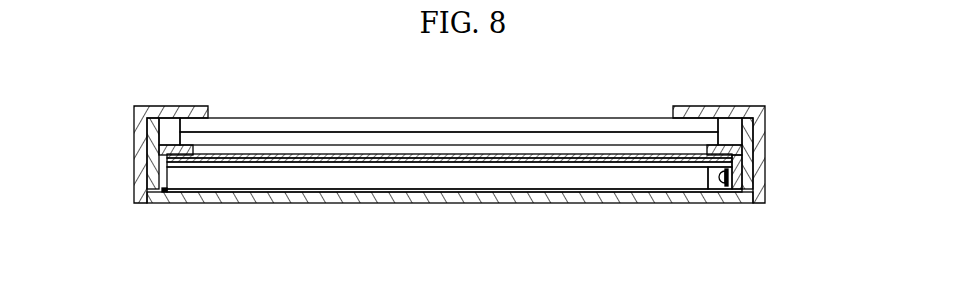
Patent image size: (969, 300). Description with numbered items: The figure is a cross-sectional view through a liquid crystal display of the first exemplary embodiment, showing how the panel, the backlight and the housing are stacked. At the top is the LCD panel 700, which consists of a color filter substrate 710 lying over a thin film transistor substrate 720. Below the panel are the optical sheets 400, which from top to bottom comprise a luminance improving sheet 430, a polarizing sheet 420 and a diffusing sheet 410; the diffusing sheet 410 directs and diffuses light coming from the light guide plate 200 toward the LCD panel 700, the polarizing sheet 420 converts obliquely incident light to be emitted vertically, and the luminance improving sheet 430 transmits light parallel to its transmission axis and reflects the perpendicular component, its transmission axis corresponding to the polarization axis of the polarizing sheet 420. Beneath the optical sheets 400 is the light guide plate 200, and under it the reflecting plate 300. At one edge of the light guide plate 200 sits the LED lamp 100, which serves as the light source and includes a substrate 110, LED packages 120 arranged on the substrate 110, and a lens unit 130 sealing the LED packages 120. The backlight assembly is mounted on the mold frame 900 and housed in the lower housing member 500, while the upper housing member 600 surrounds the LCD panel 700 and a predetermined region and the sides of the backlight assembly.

The LED lamp 100 is at (708, 217).
The substrate 110 is at (752, 201).
The LED packages 120 is at (727, 184).
The lens unit 130 is at (713, 176).
The light guide plate 200 is at (576, 175).
The reflecting plate 300 is at (512, 191).
The optical sheets 400 is at (517, 177).
The diffusing sheet 410 is at (738, 167).
The polarizing sheet 420 is at (735, 162).
The luminance improving sheet 430 is at (732, 157).
The lower housing member 500 is at (150, 198).
The upper housing member 600 is at (140, 133).
The LCD panel 700 is at (524, 124).
The color filter substrate 710 is at (714, 125).
The thin film transistor substrate 720 is at (718, 138).
The mold frame 900 is at (152, 172).